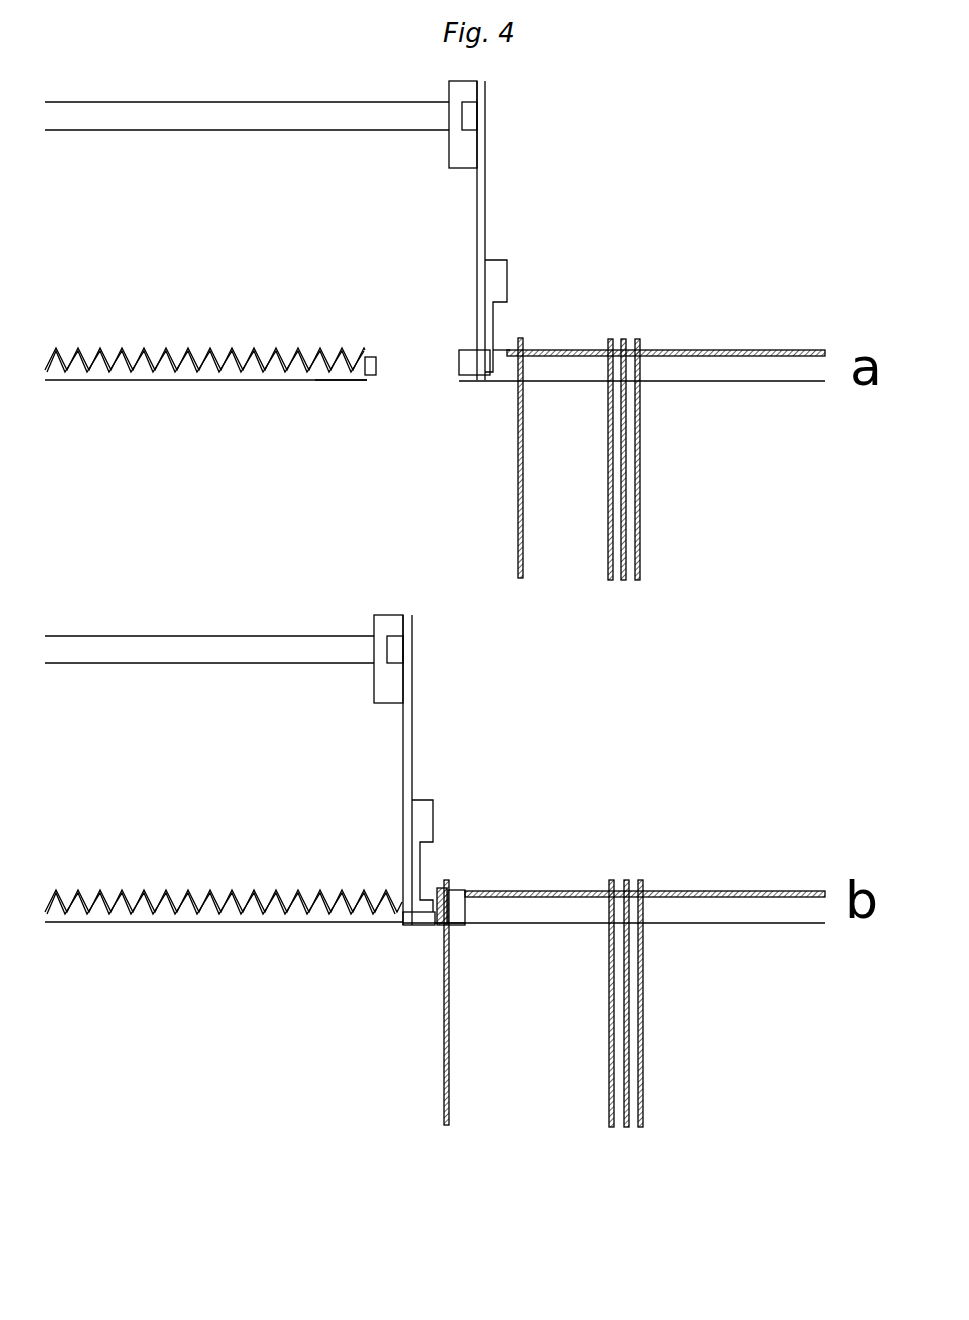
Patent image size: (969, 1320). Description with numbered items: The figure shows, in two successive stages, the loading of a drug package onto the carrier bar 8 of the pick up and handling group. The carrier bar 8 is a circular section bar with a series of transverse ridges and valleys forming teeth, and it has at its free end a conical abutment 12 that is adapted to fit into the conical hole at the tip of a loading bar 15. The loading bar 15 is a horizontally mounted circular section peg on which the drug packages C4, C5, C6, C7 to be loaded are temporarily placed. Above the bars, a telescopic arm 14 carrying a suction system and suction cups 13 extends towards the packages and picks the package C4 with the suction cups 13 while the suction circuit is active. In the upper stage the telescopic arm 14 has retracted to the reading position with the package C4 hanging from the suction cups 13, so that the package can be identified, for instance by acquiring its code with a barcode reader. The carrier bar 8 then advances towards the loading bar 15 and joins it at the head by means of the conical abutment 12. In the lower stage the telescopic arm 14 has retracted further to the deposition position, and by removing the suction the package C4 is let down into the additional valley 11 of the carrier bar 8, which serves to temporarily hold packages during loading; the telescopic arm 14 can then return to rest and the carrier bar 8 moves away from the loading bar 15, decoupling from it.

The carrier bar 8 is at (160, 372).
The additional valley 11 is at (362, 350).
The conical abutment 12 is at (377, 366).
The suction cups 13 is at (507, 355).
The telescopic arm 14 is at (108, 108).
The loading bar 15 is at (748, 372).
The package C4 is at (518, 466).
The package C5 is at (610, 566).
The package C6 is at (622, 580).
The package C7 is at (638, 550).